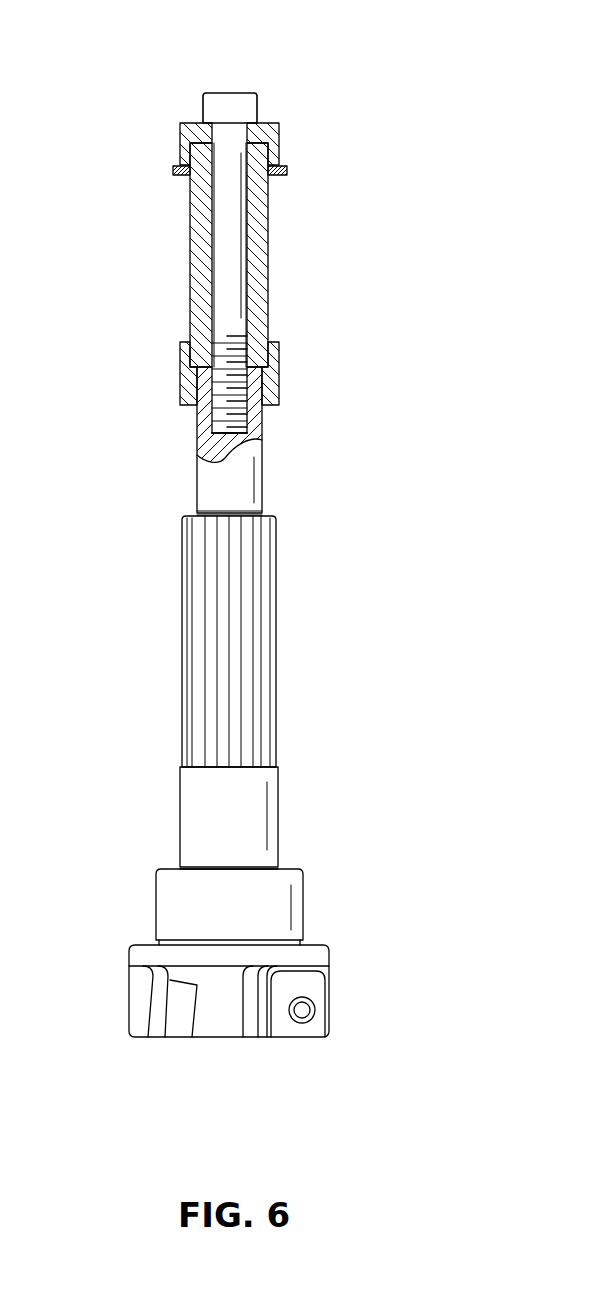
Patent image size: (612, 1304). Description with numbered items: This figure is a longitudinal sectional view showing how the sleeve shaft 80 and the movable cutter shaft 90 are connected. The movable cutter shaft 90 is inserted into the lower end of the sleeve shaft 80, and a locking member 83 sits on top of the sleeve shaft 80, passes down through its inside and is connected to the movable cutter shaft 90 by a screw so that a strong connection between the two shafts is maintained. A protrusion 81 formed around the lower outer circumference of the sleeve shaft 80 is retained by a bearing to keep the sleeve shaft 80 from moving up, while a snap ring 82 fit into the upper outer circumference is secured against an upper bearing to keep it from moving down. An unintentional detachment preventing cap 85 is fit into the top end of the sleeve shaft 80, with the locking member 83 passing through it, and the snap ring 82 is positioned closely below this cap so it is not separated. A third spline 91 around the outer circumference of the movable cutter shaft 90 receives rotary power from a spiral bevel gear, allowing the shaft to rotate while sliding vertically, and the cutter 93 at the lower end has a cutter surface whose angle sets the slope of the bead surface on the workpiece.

The sleeve shaft 80 is at (258, 262).
The protrusion 81 is at (185, 372).
The snap ring 82 is at (173, 170).
The locking member 83 is at (228, 108).
The unintentional detachment preventing cap 85 is at (180, 125).
The movable cutter shaft 90 is at (248, 820).
The third spline 91 is at (253, 643).
The cutter 93 is at (278, 1022).